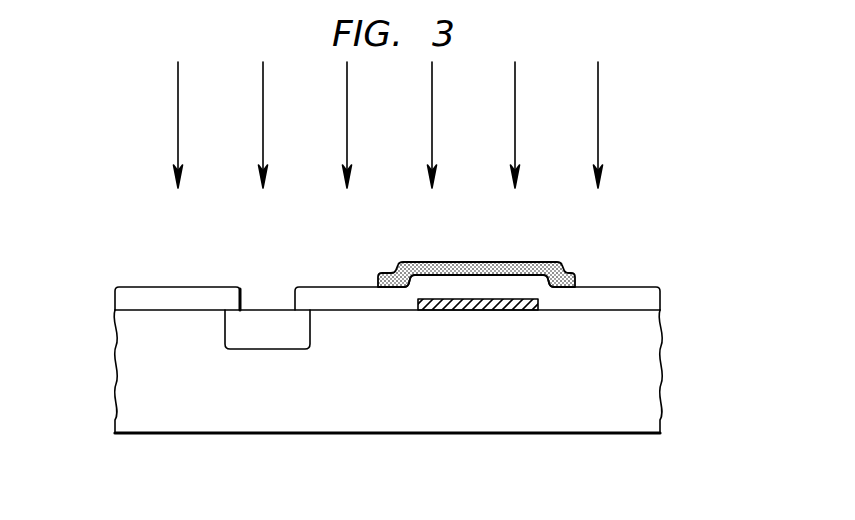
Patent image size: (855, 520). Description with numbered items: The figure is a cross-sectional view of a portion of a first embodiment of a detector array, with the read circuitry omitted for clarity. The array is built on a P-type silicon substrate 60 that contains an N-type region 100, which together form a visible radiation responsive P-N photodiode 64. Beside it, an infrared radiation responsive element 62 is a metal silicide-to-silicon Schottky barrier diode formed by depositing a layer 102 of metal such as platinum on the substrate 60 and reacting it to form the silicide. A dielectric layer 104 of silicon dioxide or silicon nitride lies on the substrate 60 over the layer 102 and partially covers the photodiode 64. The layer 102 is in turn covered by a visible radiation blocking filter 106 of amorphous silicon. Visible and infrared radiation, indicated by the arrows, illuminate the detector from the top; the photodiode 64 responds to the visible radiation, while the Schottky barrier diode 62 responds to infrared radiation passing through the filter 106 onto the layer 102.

The substrate 60 is at (140, 353).
The infrared radiation responsive element 62 is at (600, 268).
The P-N photodiode 64 is at (266, 290).
The N-type region 100 is at (287, 351).
The metal layer 102 is at (483, 312).
The dielectric layer 104 is at (663, 297).
The visible radiation blocking filter 106 is at (473, 262).